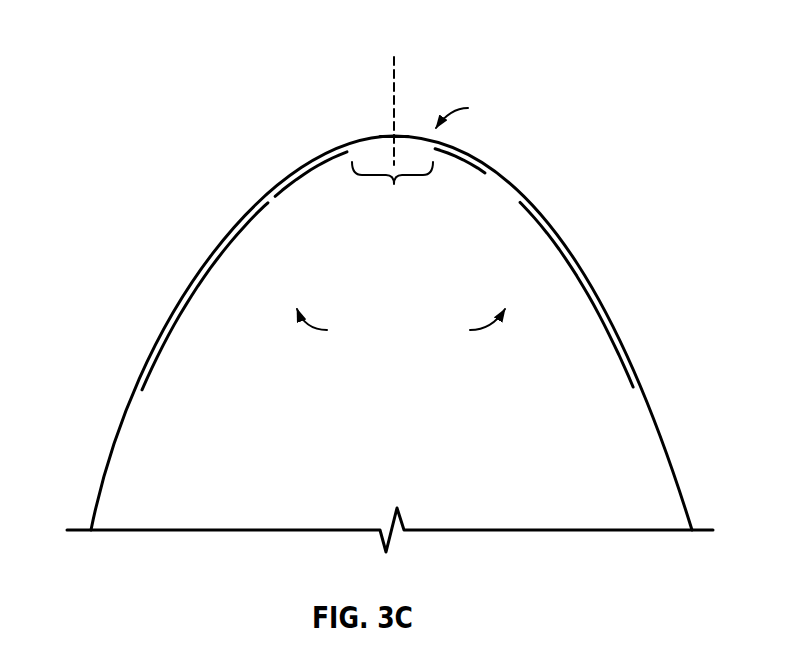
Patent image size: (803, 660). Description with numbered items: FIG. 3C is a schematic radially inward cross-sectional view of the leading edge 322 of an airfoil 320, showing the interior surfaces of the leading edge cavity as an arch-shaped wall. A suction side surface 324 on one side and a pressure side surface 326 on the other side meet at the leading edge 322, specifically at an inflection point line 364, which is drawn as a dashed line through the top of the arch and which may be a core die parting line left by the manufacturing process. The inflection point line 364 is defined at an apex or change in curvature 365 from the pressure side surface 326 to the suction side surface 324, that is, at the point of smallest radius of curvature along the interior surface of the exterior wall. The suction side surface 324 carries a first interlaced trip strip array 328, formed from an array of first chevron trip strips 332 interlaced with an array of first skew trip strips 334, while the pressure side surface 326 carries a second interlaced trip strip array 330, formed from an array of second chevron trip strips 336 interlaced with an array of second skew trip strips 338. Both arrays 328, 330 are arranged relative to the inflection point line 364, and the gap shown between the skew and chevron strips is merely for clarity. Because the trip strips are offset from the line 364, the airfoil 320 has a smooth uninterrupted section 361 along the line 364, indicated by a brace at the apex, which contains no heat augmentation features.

The airfoil 320 is at (384, 297).
The leading edge 322 is at (385, 137).
The suction side surface 324 is at (117, 437).
The pressure side surface 326 is at (672, 453).
The first interlaced trip strip array 328 is at (337, 329).
The second interlaced trip strip array 330 is at (463, 329).
The first chevron trip strips 332 is at (183, 318).
The first skew trip strips 334 is at (297, 179).
The second chevron trip strips 336 is at (485, 175).
The second skew trip strips 338 is at (602, 312).
The uninterrupted section 361 is at (392, 194).
The inflection point line 364 is at (397, 80).
The change in curvature 365 is at (476, 111).